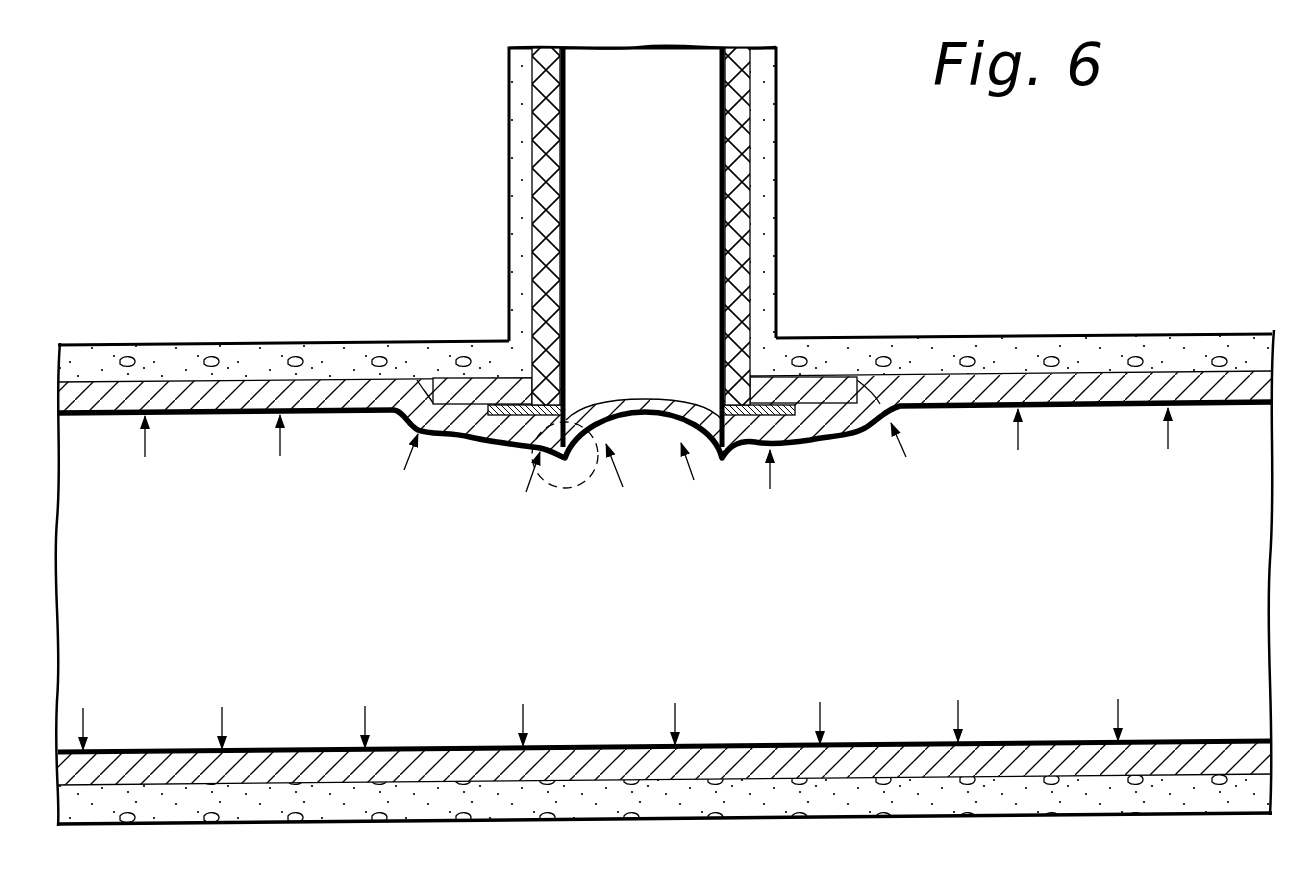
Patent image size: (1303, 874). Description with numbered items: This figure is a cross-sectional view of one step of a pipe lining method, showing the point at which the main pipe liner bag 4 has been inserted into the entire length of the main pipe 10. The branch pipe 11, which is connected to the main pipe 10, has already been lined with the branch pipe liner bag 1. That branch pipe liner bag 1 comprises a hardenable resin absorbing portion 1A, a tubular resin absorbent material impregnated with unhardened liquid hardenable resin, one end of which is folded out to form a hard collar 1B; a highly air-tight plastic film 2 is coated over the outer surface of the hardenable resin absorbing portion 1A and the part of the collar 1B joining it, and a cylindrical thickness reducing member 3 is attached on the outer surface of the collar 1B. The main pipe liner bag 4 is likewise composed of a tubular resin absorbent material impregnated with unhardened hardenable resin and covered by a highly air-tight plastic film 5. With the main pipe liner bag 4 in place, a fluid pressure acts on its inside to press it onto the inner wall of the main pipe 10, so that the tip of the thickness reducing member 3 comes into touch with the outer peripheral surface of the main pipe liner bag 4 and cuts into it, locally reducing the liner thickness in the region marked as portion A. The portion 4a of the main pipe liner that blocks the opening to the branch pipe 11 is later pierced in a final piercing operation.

The branch pipe liner bag 1 is at (568, 159).
The hardenable resin absorbing portion 1A is at (546, 216).
The collar 1B is at (838, 398).
The plastic film 2 is at (722, 263).
The thickness reducing member 3 is at (722, 413).
The main pipe liner bag 4 is at (975, 403).
The portion of the main pipe liner 4a is at (634, 404).
The plastic film 5 is at (315, 412).
The main pipe 10 is at (846, 804).
The branch pipe 11 is at (778, 198).
The portion A is at (568, 486).